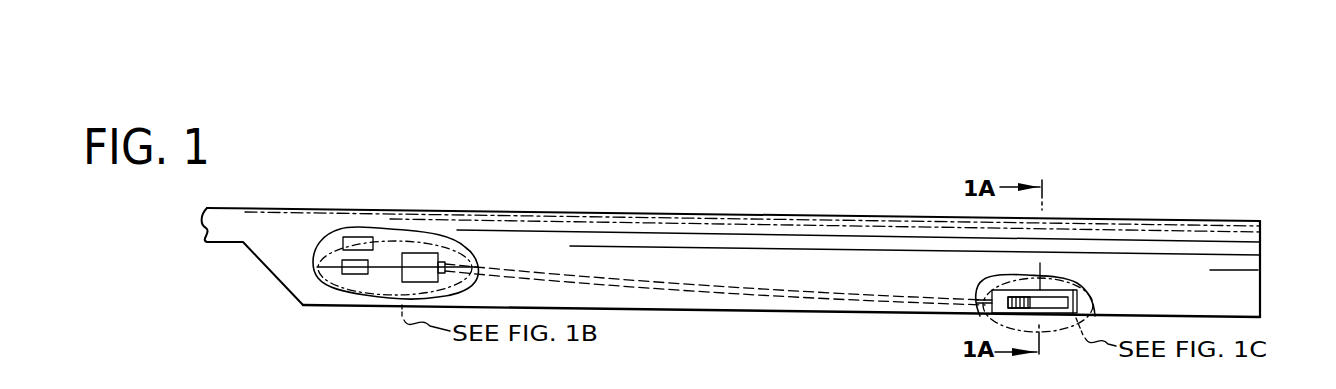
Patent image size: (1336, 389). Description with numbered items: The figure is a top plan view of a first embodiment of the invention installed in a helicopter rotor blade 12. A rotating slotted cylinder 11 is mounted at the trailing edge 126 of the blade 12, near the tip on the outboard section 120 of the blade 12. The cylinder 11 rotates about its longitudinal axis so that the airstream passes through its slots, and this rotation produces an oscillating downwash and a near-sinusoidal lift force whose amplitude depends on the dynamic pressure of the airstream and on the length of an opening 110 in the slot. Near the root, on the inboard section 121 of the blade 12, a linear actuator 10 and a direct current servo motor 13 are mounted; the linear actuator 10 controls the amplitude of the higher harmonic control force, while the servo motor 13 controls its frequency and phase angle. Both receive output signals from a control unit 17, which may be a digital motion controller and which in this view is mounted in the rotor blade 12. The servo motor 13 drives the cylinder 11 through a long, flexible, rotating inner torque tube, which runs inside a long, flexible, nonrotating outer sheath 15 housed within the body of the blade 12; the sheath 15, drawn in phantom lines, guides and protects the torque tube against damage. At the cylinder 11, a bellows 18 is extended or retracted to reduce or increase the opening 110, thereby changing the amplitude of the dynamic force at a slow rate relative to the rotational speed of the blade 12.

The linear actuator 10 is at (347, 279).
The rotating slotted cylinder 11 is at (1041, 270).
The helicopter rotor blade 12 is at (707, 210).
The servo motor 13 is at (398, 280).
The outer sheath 15 is at (692, 291).
The control unit 17 is at (355, 237).
The bellows 18 is at (1015, 292).
The opening 110 is at (1057, 307).
The outboard section 120 is at (1262, 283).
The inboard section 121 is at (273, 273).
The trailing edge 126 is at (772, 304).